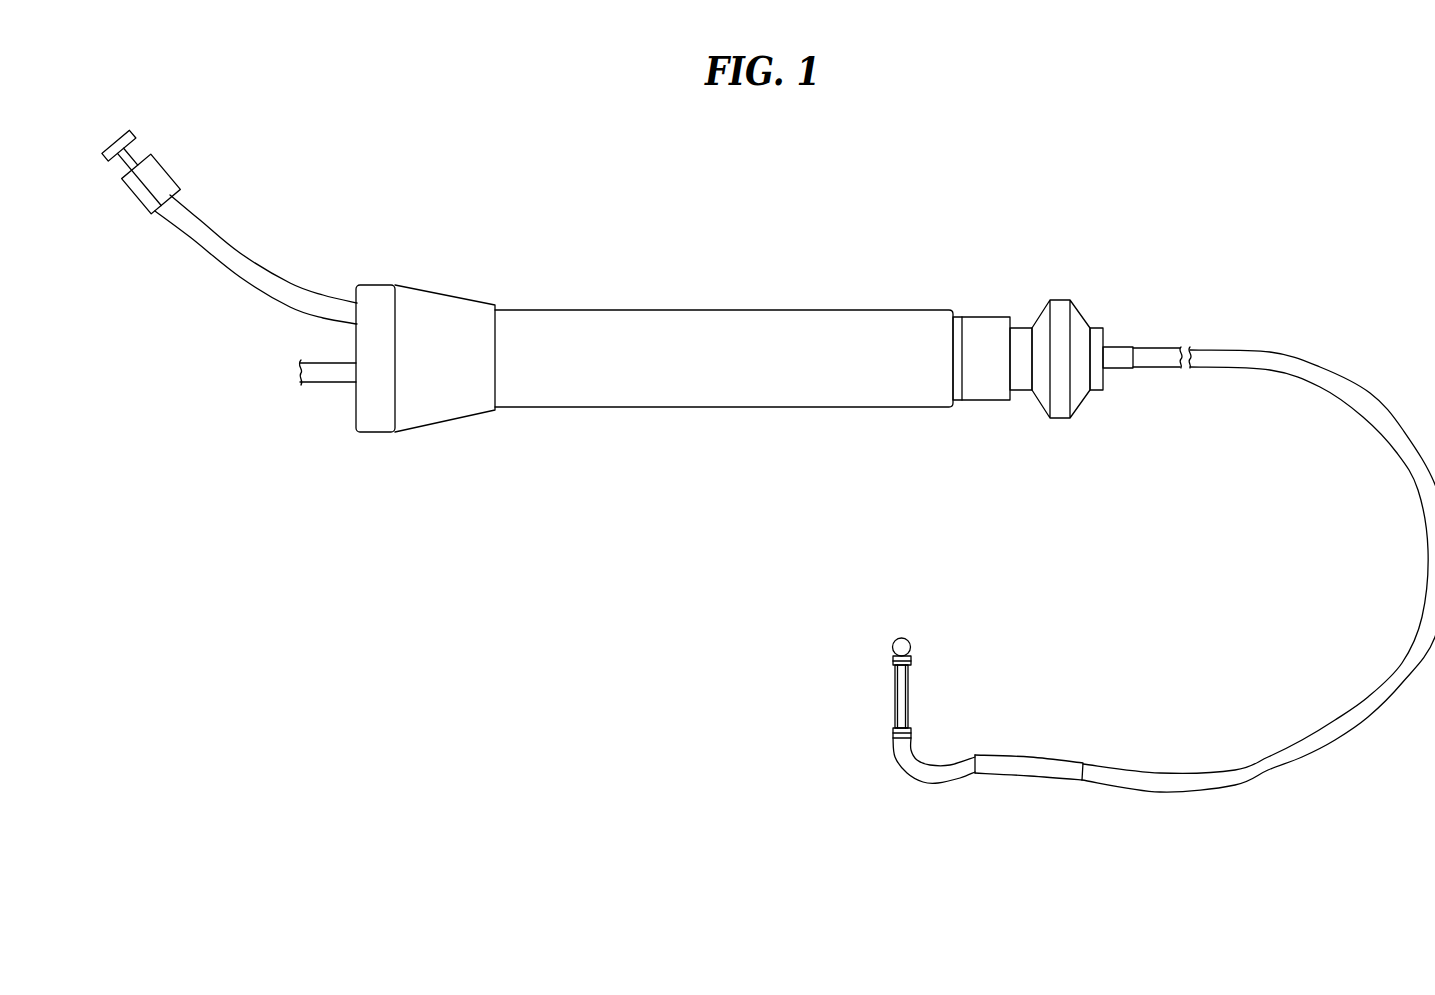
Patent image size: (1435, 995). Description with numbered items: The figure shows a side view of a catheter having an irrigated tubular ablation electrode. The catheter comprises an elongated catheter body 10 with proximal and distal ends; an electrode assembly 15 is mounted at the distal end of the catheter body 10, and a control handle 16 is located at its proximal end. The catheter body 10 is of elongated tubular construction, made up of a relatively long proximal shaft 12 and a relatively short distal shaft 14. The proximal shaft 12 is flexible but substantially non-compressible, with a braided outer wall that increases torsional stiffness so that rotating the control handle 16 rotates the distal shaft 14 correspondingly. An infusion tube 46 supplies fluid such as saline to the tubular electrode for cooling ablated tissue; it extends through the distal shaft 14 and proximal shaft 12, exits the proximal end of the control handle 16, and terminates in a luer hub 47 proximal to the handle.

The catheter body 10 is at (1203, 297).
The proximal shaft 12 is at (1147, 357).
The distal shaft 14 is at (1015, 763).
The electrode assembly 15 is at (868, 661).
The control handle 16 is at (563, 335).
The infusion tube 46 is at (224, 244).
The luer hub 47 is at (167, 167).